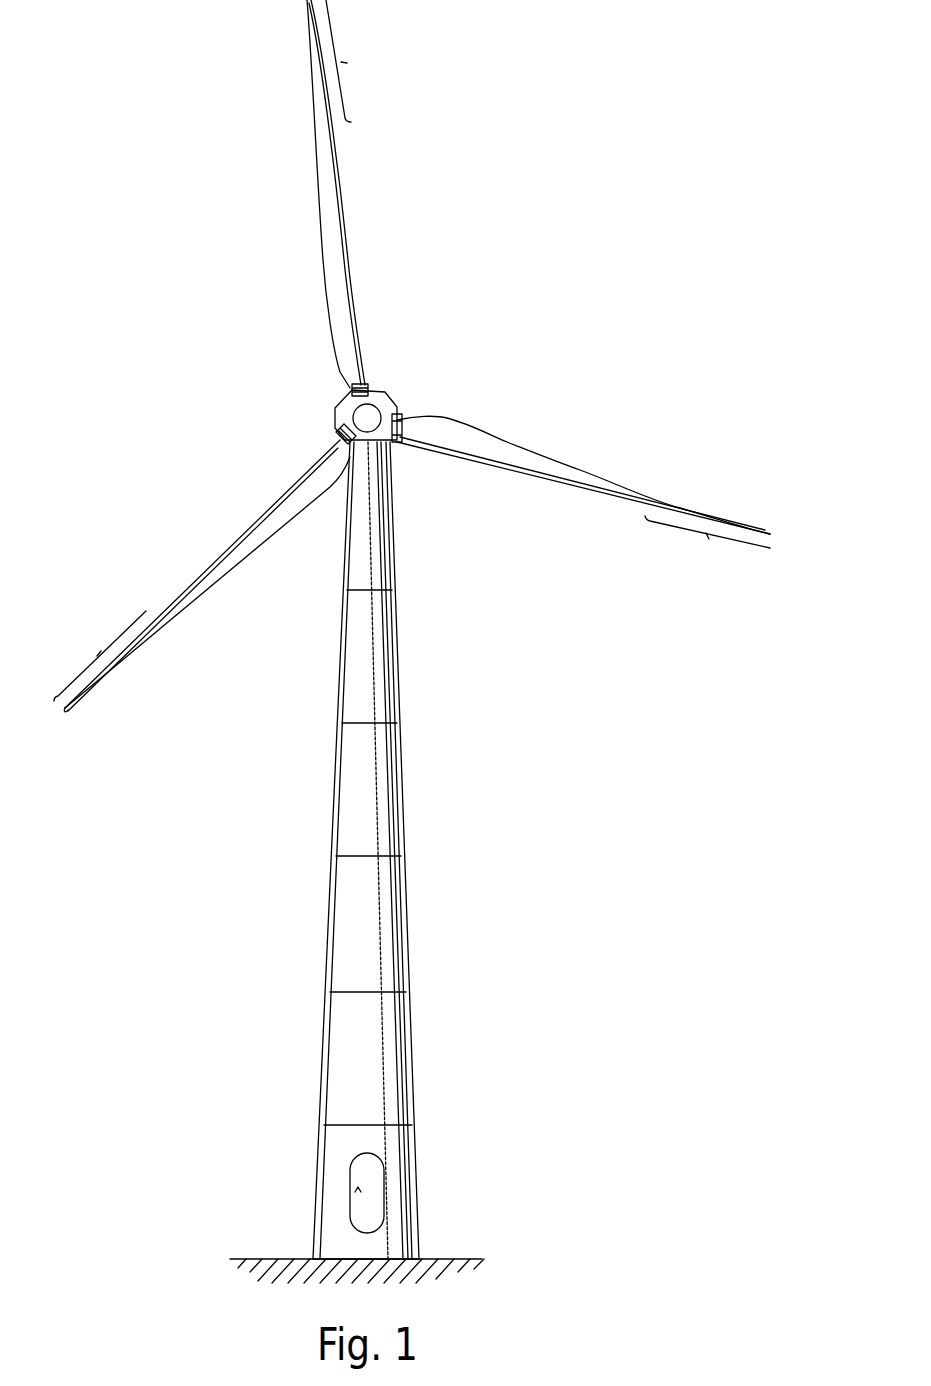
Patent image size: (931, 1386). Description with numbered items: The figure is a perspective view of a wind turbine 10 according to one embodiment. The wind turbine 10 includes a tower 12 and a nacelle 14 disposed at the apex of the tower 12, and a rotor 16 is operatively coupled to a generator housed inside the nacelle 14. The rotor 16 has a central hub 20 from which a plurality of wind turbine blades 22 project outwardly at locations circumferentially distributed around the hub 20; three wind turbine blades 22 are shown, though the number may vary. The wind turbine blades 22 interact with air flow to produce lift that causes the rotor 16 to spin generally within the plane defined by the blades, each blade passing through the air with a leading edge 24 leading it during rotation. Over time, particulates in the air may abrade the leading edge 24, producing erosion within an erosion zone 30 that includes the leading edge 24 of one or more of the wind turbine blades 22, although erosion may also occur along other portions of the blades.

The wind turbine 10 is at (486, 254).
The tower 12 is at (368, 947).
The nacelle 14 is at (386, 393).
The rotor 16 is at (351, 418).
The central hub 20 is at (343, 407).
The wind turbine blade 22 is at (331, 263).
The leading edge 24 is at (346, 213).
The erosion zone 30 is at (412, 350).